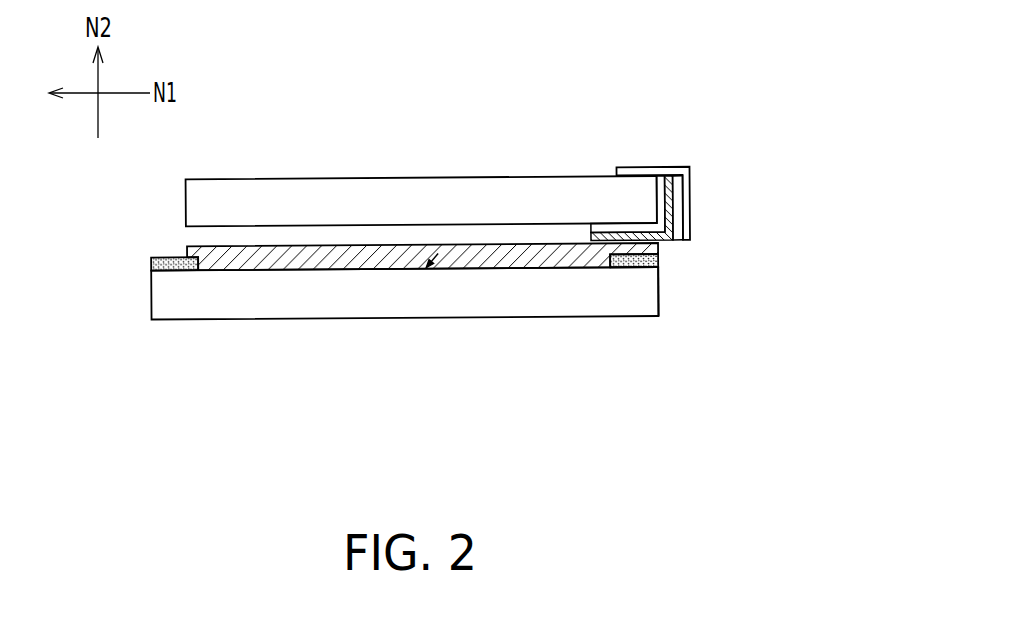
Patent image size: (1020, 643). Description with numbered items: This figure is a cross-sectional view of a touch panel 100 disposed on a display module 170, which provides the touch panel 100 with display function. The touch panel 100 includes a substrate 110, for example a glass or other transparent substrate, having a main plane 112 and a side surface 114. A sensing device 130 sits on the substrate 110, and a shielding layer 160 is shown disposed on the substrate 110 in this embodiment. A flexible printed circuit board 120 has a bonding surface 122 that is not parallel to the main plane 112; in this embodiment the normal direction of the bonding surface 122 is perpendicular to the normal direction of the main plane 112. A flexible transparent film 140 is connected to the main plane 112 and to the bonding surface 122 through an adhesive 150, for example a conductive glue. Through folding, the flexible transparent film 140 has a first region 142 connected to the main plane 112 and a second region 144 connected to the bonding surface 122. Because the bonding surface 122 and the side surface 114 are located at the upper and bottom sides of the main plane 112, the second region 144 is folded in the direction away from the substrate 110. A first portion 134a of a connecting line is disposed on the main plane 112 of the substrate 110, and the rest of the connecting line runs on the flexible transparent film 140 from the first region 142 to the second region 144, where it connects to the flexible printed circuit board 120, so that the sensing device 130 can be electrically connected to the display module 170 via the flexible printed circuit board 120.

The touch panel 100 is at (487, 278).
The substrate 110 is at (527, 297).
The main plane 112 is at (438, 252).
The side surface 114 is at (661, 302).
The flexible printed circuit board 120 is at (680, 167).
The bonding surface 122 is at (676, 188).
The sensing device 130 is at (378, 268).
The first portion 134a is at (640, 266).
The flexible transparent film 140 is at (707, 227).
The first region 142 is at (645, 229).
The second region 144 is at (663, 213).
The adhesive 150 is at (683, 191).
The shielding layer 160 is at (172, 270).
The display module 170 is at (523, 200).